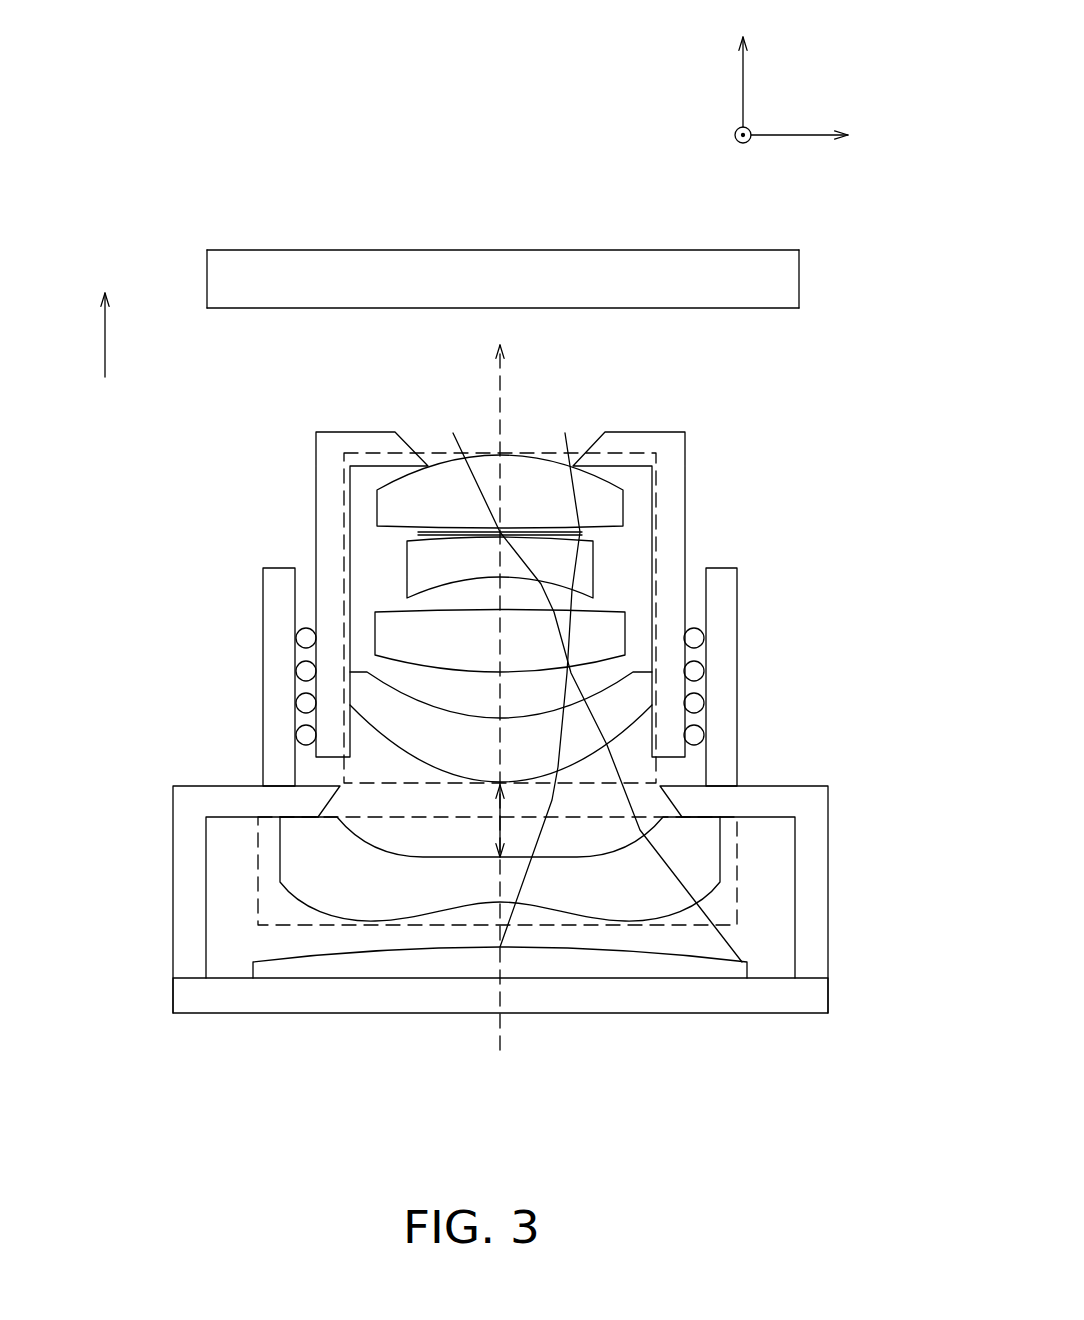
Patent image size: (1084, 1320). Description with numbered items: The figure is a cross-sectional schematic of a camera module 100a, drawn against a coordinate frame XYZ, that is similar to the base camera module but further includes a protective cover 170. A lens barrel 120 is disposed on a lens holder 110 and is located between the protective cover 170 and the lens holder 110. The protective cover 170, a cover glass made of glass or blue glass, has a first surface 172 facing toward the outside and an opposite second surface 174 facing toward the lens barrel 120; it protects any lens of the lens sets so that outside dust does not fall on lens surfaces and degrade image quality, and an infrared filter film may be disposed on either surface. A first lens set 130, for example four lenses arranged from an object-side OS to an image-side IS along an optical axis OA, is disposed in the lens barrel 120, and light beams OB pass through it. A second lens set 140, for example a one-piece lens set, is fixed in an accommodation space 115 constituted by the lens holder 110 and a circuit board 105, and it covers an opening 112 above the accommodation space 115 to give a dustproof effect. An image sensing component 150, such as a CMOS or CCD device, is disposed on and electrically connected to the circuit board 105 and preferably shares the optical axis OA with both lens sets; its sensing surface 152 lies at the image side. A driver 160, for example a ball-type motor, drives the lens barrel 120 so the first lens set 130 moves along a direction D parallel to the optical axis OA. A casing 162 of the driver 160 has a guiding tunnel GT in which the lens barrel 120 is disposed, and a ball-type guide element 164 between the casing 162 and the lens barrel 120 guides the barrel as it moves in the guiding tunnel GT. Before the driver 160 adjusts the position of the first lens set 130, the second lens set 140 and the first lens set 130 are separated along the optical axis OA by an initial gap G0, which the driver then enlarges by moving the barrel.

The camera module 100a is at (862, 1166).
The protective cover 170 is at (546, 283).
The first surface 172 is at (740, 250).
The second surface 174 is at (740, 308).
The lens barrel 120 is at (670, 498).
The first lens set 130 is at (650, 545).
The driver 160 is at (581, 677).
The casing 162 is at (725, 732).
The ball-type guide element 164 is at (697, 640).
The opening 112 is at (627, 832).
The second lens set 140 is at (737, 843).
The accommodation space 115 is at (783, 878).
The lens holder 110 is at (535, 908).
The image sensor 152 is at (710, 960).
The image sensing component 150 is at (575, 1012).
The circuit board 105 is at (812, 997).
The object-side OS is at (345, 163).
The optical axis OA is at (498, 718).
The light beam OB is at (453, 433).
The guiding tunnel GT is at (307, 568).
The image-side IS is at (283, 943).
The initial gap G0 is at (516, 821).
The direction D is at (102, 317).
The coordinate axes XYZ is at (802, 93).